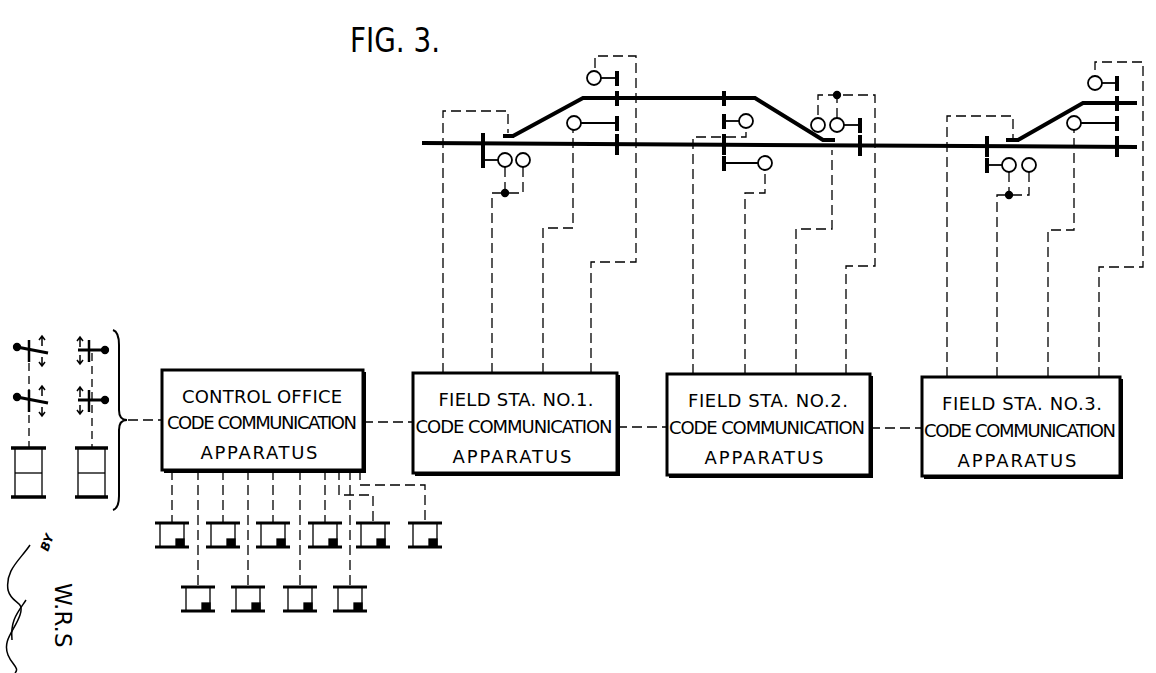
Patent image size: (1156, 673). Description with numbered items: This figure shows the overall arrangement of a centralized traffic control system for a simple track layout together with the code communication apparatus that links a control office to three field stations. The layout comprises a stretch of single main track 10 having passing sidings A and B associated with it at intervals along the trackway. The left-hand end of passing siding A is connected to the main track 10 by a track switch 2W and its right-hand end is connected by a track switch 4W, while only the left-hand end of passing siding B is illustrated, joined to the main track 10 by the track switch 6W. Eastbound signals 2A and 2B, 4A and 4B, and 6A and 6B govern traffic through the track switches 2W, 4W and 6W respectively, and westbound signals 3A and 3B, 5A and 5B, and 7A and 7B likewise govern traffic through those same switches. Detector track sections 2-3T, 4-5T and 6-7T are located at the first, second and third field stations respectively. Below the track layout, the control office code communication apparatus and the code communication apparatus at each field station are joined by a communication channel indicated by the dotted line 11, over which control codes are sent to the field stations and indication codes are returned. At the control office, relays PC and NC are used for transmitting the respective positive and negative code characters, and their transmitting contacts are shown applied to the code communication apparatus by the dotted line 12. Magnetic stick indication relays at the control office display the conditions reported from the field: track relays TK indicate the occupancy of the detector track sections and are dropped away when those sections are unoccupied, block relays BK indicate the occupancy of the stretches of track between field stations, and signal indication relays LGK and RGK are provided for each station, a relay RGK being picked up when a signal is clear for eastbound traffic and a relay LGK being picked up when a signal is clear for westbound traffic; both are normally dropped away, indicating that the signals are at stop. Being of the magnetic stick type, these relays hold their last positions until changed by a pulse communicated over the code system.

The main track 10 is at (908, 145).
The communication channel 11 is at (642, 415).
The transmitting contacts of relays PC and NC 12 is at (137, 420).
The passing siding A is at (673, 98).
The passing siding B is at (1128, 103).
The track switch 2W is at (513, 134).
The track switch 4W is at (830, 142).
The track switch 6W is at (1016, 137).
The detector track section 2-3T is at (432, 143).
The detector track section 4-5T is at (797, 145).
The detector track section 6-7T is at (1085, 149).
The eastbound signal 2A is at (527, 167).
The eastbound signal 2B is at (500, 167).
The westbound signal 3A is at (580, 119).
The westbound signal 3B is at (589, 74).
The eastbound signal 4A is at (760, 170).
The eastbound signal 4B is at (752, 124).
The westbound signal 5A is at (812, 120).
The westbound signal 5B is at (841, 119).
The eastbound signal 6A is at (1028, 172).
The eastbound signal 6B is at (1005, 172).
The westbound signal 7A is at (1080, 129).
The westbound signal 7B is at (1089, 80).
The positive code relay PC is at (29, 416).
The negative code relay NC is at (92, 417).
The westbound signal indication relay LGK is at (299, 508).
The track indication relay TK is at (261, 540).
The block indication relay BK is at (260, 540).
The eastbound signal indication relay RGK is at (362, 540).